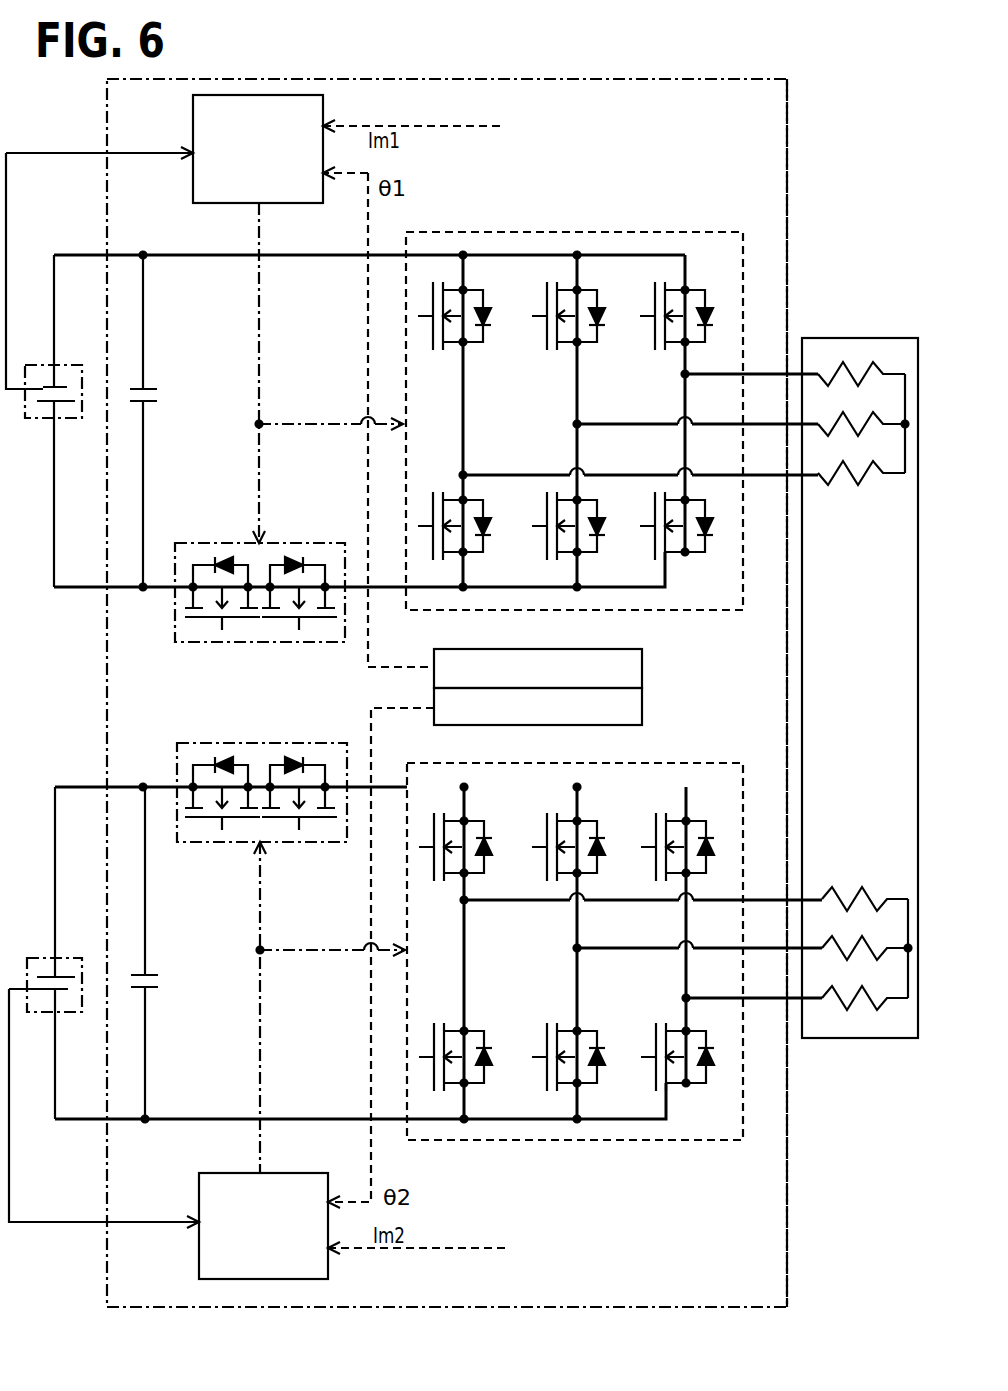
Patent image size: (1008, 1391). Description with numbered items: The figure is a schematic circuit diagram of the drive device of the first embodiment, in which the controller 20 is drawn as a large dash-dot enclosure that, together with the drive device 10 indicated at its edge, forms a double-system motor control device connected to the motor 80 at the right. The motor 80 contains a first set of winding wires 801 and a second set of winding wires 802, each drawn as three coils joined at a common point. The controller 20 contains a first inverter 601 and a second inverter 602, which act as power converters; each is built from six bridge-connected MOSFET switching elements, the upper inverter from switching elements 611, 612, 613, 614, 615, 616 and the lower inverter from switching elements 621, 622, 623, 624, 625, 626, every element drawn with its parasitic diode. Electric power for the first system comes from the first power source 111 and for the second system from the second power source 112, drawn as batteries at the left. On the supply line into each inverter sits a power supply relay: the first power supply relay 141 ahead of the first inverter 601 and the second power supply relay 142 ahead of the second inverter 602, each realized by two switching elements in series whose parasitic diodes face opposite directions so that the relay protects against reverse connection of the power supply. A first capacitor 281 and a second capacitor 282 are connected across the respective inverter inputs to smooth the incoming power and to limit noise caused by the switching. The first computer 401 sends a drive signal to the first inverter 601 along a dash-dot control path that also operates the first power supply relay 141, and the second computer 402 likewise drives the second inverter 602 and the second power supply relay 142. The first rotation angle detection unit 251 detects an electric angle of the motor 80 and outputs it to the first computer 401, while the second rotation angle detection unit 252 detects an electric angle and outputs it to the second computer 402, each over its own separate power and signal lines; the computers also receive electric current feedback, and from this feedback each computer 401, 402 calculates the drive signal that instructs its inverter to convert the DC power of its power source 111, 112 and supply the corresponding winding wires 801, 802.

The drive device 10 is at (788, 128).
The controller 20 is at (788, 175).
The motor 80 is at (858, 338).
The first set of winding wires 801 is at (846, 510).
The second set of winding wires 802 is at (848, 865).
The first power source 111 is at (60, 418).
The second power source 112 is at (65, 958).
The first power supply relay 141 is at (237, 543).
The second power supply relay 142 is at (262, 743).
The first capacitor 281 is at (152, 403).
The second capacitor 282 is at (152, 972).
The first rotation angle detection unit 251 is at (642, 665).
The second rotation angle detection unit 252 is at (642, 706).
The first computer 401 is at (193, 183).
The second computer 402 is at (199, 1183).
The first inverter 601 is at (612, 407).
The second inverter 602 is at (614, 940).
The switching element 611 is at (476, 552).
The switching element 612 is at (590, 552).
The switching element 613 is at (703, 552).
The switching element 614 is at (476, 342).
The switching element 615 is at (590, 342).
The switching element 616 is at (675, 342).
The switching element 621 is at (477, 821).
The switching element 622 is at (590, 821).
The switching element 623 is at (702, 821).
The switching element 624 is at (477, 1031).
The switching element 625 is at (590, 1031).
The switching element 626 is at (675, 1031).